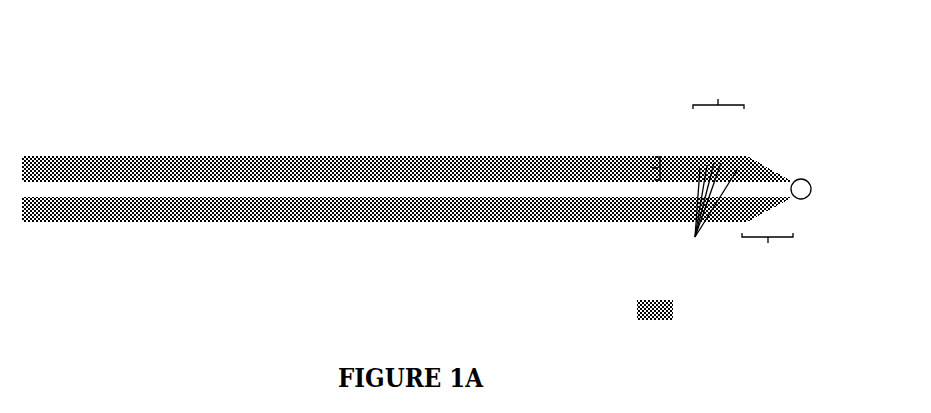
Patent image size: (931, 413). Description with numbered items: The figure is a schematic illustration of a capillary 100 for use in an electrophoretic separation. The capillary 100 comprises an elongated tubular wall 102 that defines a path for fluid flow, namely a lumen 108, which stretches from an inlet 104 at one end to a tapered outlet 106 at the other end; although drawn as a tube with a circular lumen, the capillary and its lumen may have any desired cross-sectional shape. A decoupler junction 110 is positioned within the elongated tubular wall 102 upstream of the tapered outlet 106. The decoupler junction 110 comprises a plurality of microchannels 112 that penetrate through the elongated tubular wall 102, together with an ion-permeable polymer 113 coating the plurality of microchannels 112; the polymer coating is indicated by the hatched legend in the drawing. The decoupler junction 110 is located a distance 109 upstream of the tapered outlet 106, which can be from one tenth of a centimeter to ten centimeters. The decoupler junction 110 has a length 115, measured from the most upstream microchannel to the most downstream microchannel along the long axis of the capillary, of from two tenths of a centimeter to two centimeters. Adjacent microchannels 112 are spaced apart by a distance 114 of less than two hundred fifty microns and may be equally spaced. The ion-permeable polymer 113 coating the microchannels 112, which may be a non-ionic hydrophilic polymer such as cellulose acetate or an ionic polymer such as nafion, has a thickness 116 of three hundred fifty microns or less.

The capillary 100 is at (693, 58).
The elongated tubular wall 102 is at (328, 168).
The inlet 104 is at (22, 196).
The tapered outlet 106 is at (795, 182).
The lumen 108 is at (473, 188).
The distance 109 is at (767, 251).
The decoupler junction 110 is at (705, 143).
The plurality of microchannels 112 is at (710, 210).
The ion-permeable polymer 113 is at (700, 309).
The distance 114 is at (736, 153).
The length 115 is at (718, 94).
The thickness 116 is at (643, 168).